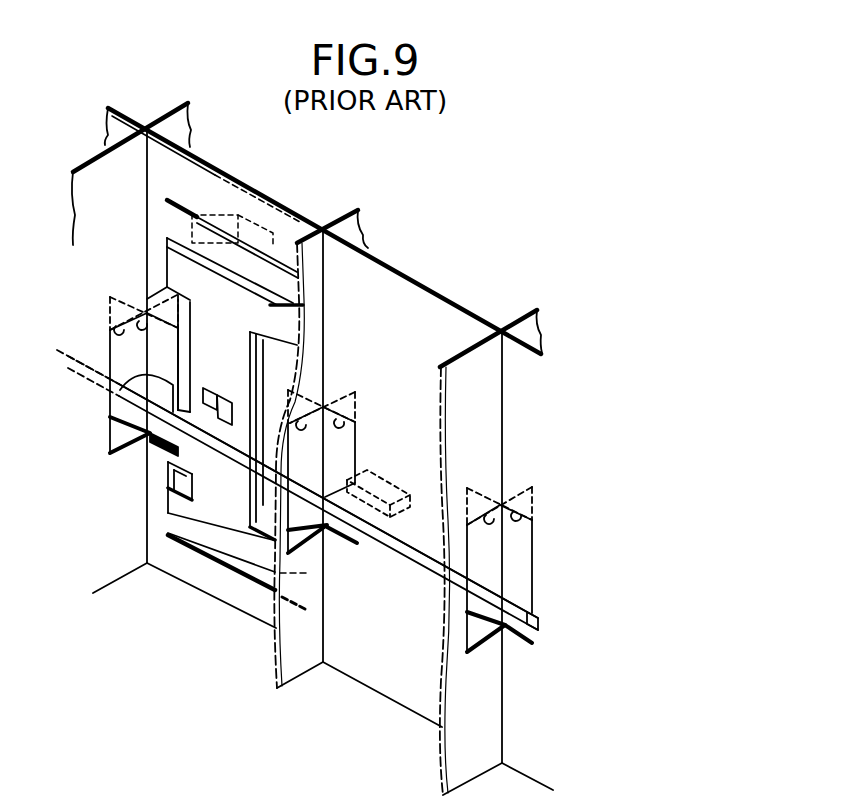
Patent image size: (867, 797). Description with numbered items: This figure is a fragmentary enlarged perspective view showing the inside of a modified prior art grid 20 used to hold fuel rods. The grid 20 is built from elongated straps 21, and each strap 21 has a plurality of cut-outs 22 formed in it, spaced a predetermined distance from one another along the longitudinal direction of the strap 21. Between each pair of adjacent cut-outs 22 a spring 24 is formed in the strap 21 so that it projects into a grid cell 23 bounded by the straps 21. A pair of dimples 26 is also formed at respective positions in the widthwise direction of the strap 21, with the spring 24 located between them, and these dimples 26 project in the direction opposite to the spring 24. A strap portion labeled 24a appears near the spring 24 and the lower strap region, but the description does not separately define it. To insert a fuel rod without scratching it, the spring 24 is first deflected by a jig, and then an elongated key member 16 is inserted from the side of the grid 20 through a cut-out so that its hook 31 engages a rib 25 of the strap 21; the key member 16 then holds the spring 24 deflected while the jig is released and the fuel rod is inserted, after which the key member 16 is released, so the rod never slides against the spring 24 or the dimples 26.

The key member 16 is at (388, 557).
The grid 20 is at (462, 288).
The elongated strap 21 is at (88, 160).
The cut-out 22 is at (145, 310).
The grid cell 23 is at (128, 152).
The spring 24 is at (217, 513).
The bracket flange 24a is at (240, 563).
The rib 25 is at (290, 360).
The dimple 26 is at (253, 224).
The hook 31 is at (108, 392).